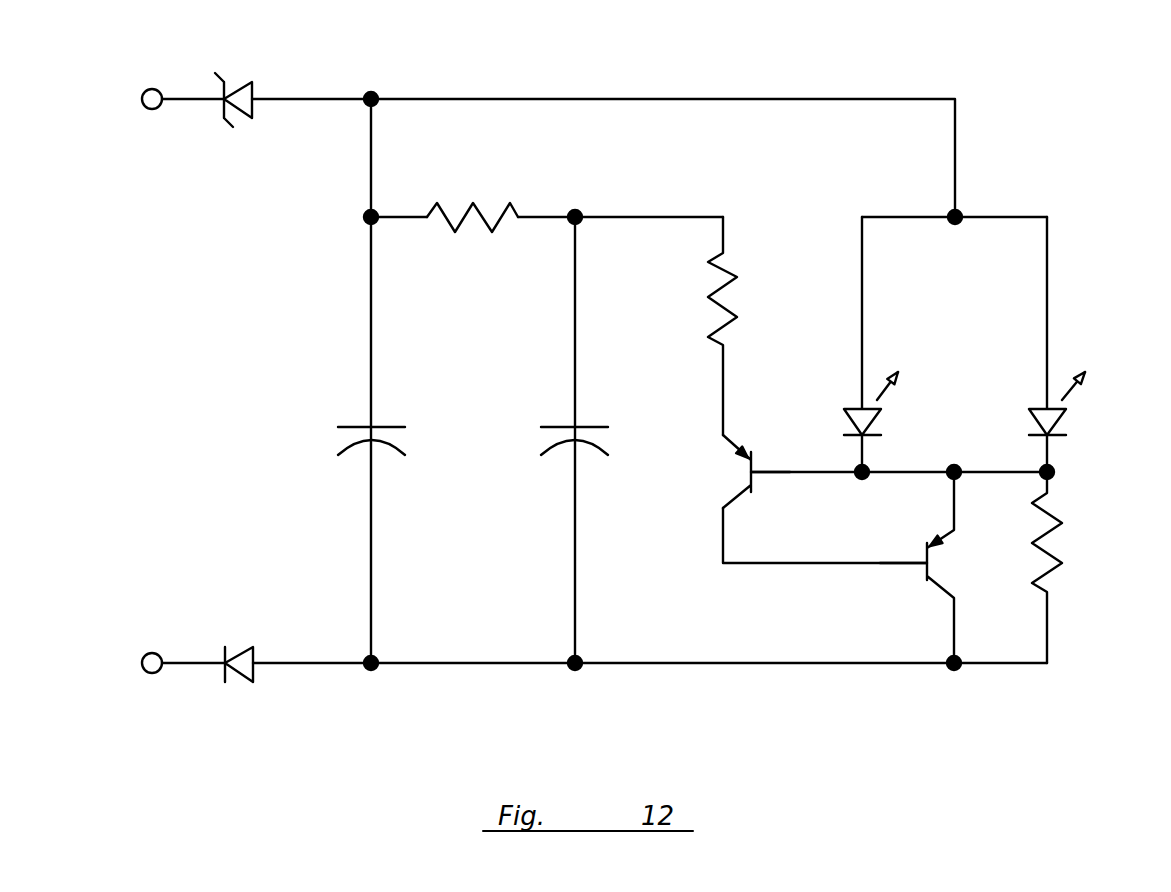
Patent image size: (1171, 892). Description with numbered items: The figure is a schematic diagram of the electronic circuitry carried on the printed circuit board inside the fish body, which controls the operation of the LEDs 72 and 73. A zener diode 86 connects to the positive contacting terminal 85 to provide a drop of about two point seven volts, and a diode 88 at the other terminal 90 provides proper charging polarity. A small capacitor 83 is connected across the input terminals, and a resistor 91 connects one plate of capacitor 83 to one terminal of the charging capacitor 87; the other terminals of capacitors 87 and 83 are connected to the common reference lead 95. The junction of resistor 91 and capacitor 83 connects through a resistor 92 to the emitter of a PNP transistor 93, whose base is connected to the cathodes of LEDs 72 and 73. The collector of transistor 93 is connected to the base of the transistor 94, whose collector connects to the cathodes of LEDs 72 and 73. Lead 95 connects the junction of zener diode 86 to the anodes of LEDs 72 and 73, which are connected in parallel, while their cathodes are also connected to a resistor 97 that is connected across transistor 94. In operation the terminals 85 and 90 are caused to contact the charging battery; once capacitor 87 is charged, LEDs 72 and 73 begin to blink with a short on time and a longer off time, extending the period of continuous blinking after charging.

The positive contacting terminal 85 is at (143, 91).
The zener diode 86 is at (226, 129).
The common reference lead 95 is at (524, 98).
The resistor 91 is at (484, 205).
The resistor 92 is at (729, 270).
The small capacitor 83 is at (386, 423).
The charging capacitor 87 is at (590, 423).
The PNP transistor 93 is at (755, 482).
The LED 72 is at (886, 404).
The LED 73 is at (1062, 421).
The NPN transistor 94 is at (924, 573).
The resistor 97 is at (1062, 551).
The terminal 90 is at (143, 653).
The diode 88 is at (246, 684).